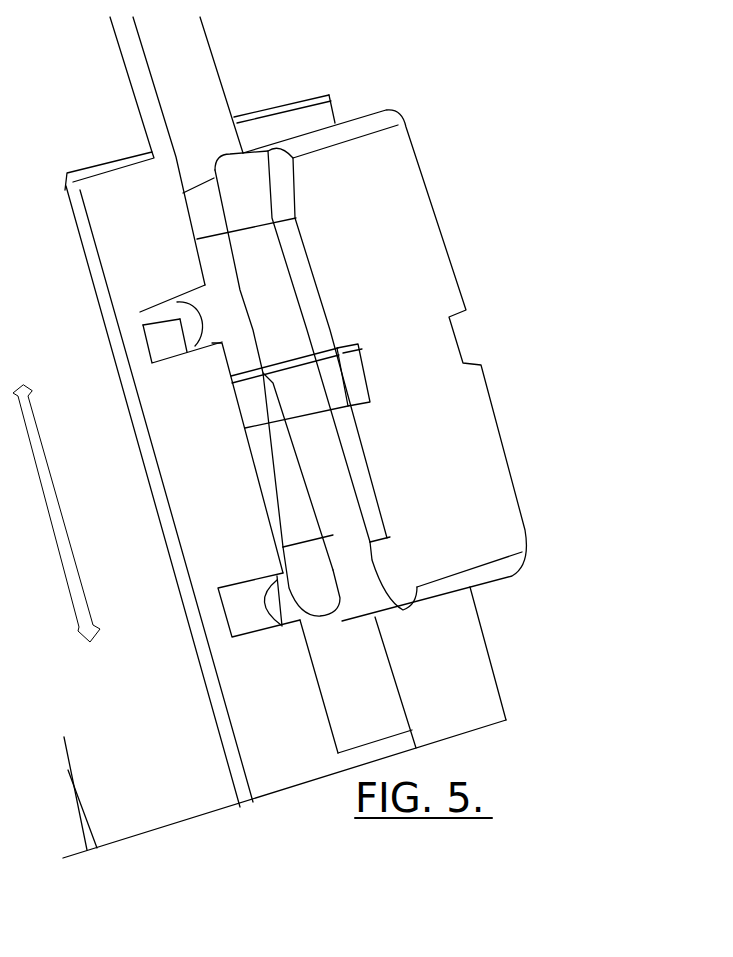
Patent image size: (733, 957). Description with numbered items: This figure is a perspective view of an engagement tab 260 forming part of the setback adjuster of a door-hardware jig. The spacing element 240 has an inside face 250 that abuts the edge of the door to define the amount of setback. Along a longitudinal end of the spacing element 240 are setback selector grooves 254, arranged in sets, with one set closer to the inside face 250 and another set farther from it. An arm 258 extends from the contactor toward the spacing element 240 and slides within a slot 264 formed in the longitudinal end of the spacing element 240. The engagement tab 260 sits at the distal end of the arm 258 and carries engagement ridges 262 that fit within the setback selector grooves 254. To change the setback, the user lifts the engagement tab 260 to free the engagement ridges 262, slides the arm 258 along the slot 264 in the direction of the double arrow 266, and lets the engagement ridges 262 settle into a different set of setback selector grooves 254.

The spacing element 240 is at (284, 440).
The inside face 250 is at (514, 653).
The setback selector grooves 254 is at (167, 498).
The arms 258 is at (248, 85).
The engagement tab 260 is at (416, 358).
The engagement ridges 262 is at (149, 390).
The slots 264 is at (422, 689).
The double arrow 266 is at (80, 575).